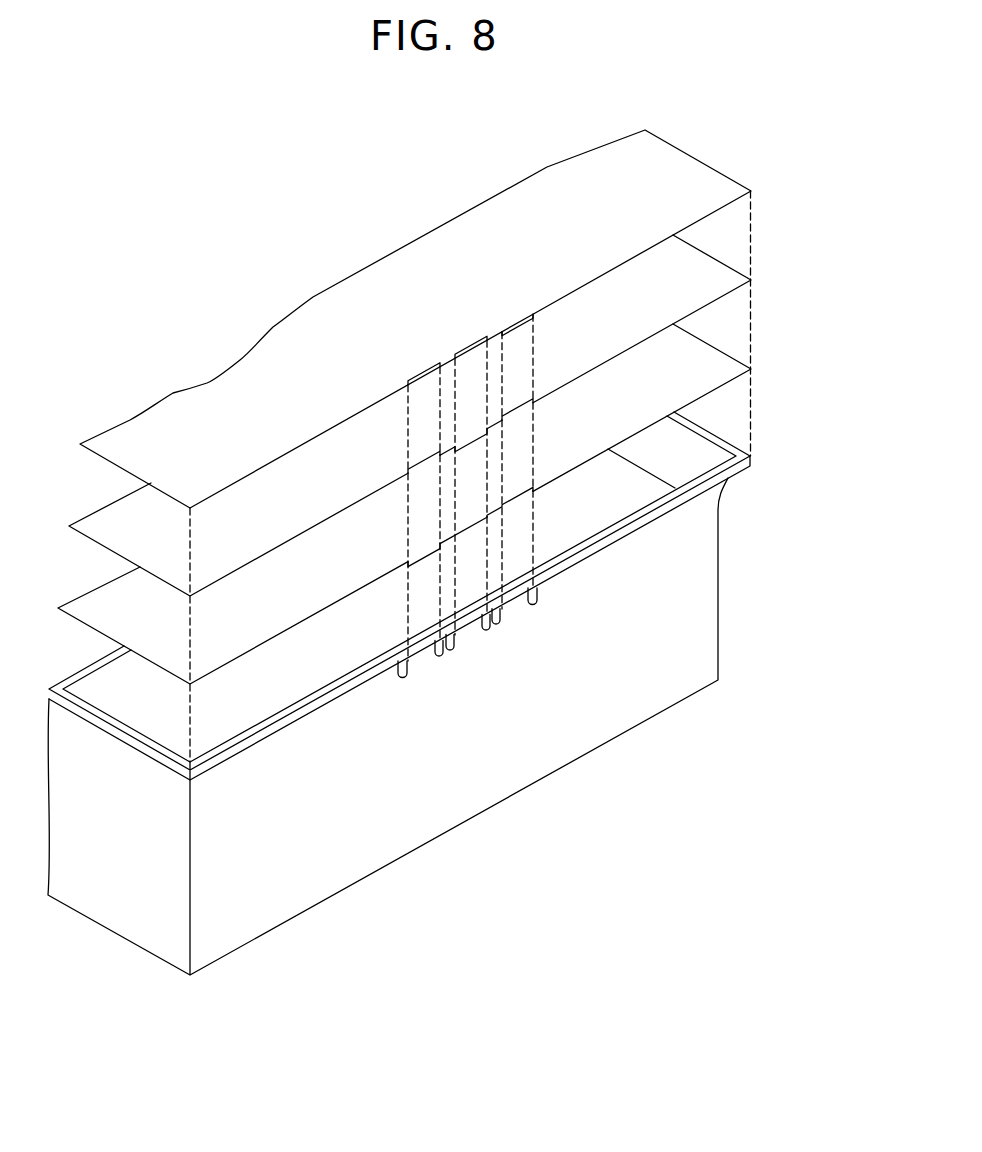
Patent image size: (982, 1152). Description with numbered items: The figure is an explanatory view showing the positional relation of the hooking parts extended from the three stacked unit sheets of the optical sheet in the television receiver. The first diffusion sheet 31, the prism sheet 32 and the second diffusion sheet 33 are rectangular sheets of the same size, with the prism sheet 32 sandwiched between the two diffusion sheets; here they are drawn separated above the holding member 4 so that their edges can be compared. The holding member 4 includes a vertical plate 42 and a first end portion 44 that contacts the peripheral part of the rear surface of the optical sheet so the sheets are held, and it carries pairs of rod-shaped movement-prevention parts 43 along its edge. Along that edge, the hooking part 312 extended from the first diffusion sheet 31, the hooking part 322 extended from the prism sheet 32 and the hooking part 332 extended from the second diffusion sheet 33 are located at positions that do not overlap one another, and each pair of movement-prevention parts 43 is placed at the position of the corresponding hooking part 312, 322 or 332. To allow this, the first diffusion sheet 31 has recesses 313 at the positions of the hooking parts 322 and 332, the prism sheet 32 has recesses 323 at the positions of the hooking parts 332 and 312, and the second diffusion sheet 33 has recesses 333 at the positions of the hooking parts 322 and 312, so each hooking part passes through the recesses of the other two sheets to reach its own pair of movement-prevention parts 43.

The holding member 4 is at (435, 686).
The first diffusion sheet 31 is at (700, 338).
The prism sheet 32 is at (693, 258).
The second diffusion sheet 33 is at (683, 158).
The vertical plate 42 is at (708, 609).
The movement-prevention part 43 is at (400, 678).
The first end portion 44 is at (705, 435).
The hooking part 312 is at (425, 553).
The recess 313 is at (533, 490).
The hooking part 322 is at (478, 441).
The recess 323 is at (513, 403).
The hooking part 332 is at (512, 333).
The recess 333 is at (468, 345).